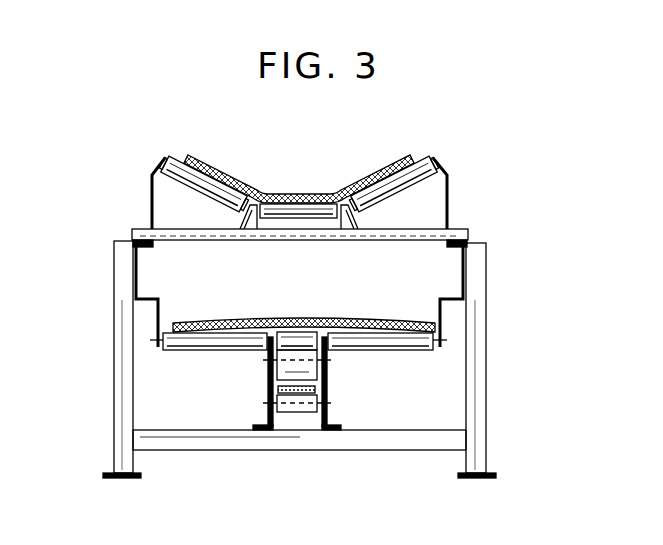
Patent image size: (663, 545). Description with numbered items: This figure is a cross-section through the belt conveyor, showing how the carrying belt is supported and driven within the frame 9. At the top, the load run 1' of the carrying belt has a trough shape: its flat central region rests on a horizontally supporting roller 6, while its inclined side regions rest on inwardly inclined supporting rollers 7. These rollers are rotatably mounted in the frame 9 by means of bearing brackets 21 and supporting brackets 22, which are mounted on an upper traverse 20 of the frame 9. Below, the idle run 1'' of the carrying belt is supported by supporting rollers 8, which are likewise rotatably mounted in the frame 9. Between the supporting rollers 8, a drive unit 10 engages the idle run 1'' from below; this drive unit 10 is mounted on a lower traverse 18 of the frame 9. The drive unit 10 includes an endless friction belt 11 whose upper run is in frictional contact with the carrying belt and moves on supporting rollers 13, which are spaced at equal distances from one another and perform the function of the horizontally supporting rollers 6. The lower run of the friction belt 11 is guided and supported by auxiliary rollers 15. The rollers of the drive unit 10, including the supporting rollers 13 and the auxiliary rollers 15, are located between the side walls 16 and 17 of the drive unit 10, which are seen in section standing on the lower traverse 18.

The load run 1' is at (299, 160).
The idle run 1'' is at (304, 304).
The horizontally supporting rollers 6 is at (275, 217).
The inwardly inclined supporting rollers 7 is at (183, 162).
The supporting rollers 8 is at (183, 340).
The frame 9 is at (473, 383).
The drive unit 10 is at (337, 378).
The endless friction belt 11 is at (293, 320).
The supporting rollers 13 is at (265, 348).
The auxiliary rollers 15 is at (305, 413).
The side wall 16 is at (268, 383).
The side wall 17 is at (328, 396).
The lower traverse 18 is at (381, 438).
The upper traverse 20 is at (462, 235).
The bearing brackets 21 is at (363, 223).
The supporting brackets 22 is at (448, 197).